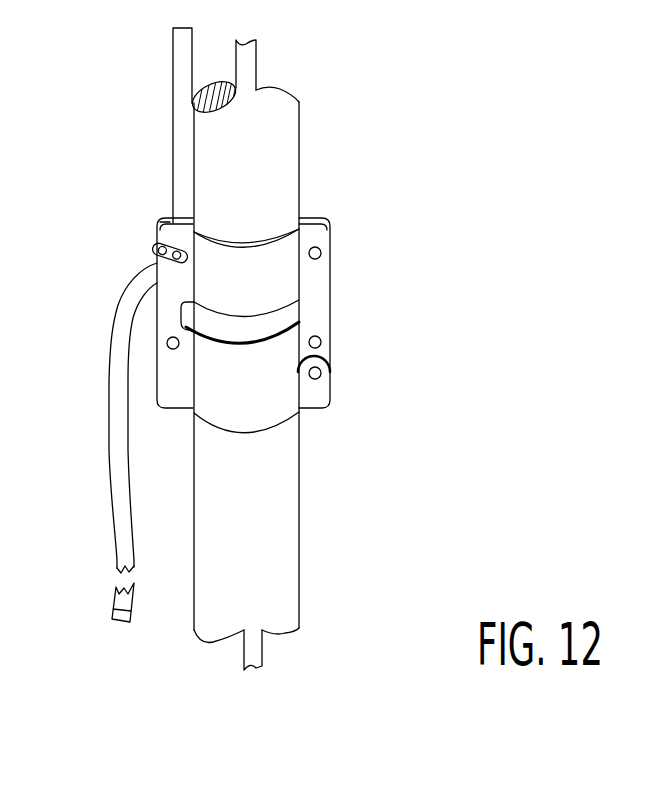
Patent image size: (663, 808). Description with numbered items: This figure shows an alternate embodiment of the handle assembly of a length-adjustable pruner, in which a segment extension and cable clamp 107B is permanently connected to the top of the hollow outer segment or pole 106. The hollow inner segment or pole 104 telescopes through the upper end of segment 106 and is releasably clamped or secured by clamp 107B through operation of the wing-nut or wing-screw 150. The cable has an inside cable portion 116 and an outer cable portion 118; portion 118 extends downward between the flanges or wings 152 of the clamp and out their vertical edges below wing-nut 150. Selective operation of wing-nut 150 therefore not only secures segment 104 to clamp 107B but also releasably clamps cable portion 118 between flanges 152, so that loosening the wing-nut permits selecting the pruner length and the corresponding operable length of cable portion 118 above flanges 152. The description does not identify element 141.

The outer cable portion 118 is at (178, 57).
The inside cable portion 116 is at (247, 63).
The inner segment or pole 104 is at (218, 138).
The outer segment or pole 106 is at (290, 498).
The segment extension and cable clamp 107B is at (316, 294).
The mounting holes 141 is at (320, 318).
The wing-nut or wing-screw 150 is at (153, 252).
The flanges or wings 152 is at (170, 222).